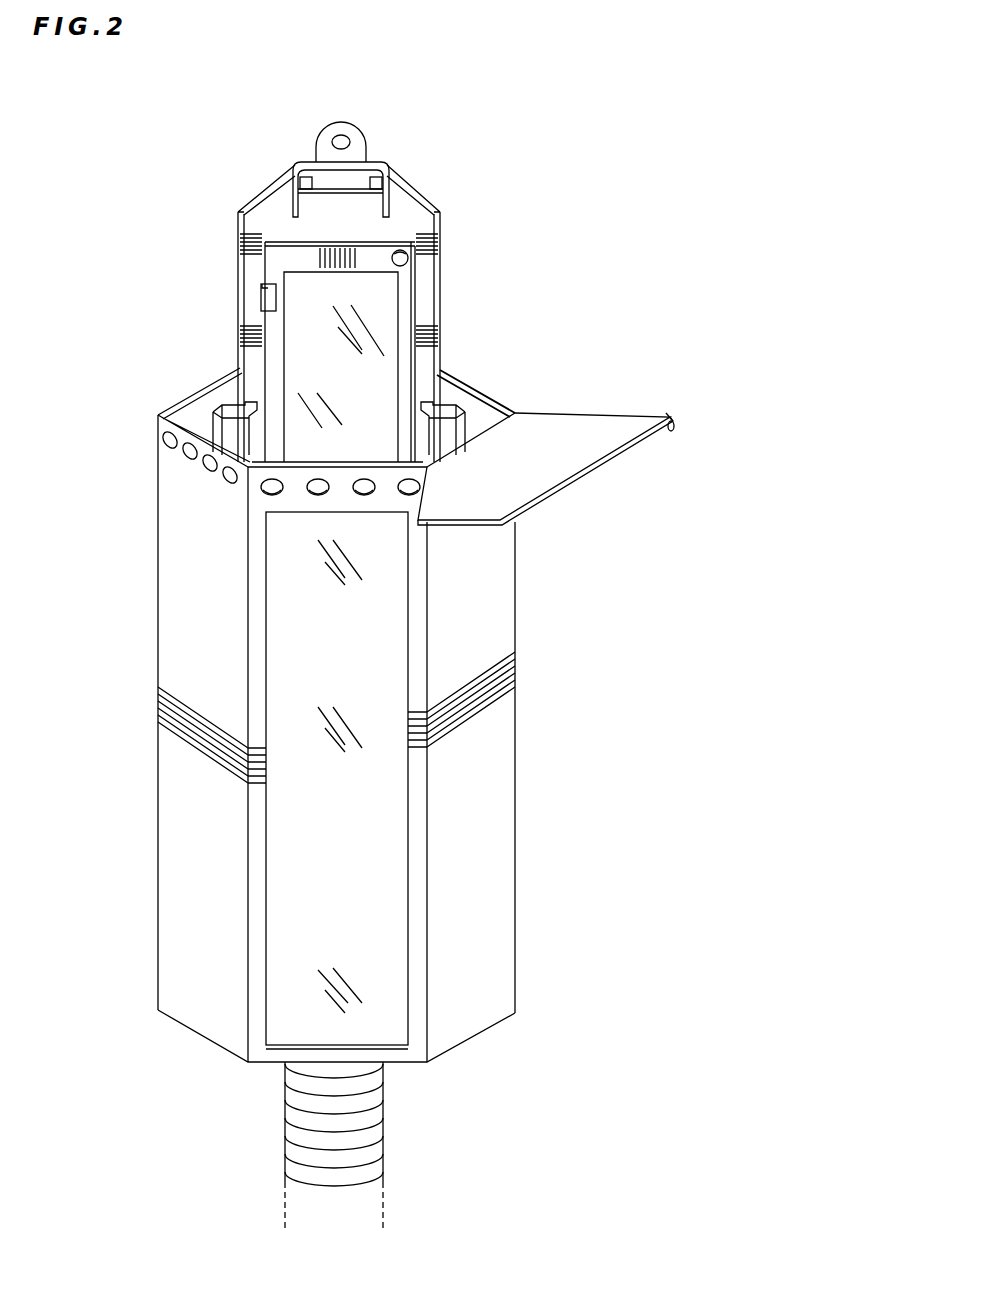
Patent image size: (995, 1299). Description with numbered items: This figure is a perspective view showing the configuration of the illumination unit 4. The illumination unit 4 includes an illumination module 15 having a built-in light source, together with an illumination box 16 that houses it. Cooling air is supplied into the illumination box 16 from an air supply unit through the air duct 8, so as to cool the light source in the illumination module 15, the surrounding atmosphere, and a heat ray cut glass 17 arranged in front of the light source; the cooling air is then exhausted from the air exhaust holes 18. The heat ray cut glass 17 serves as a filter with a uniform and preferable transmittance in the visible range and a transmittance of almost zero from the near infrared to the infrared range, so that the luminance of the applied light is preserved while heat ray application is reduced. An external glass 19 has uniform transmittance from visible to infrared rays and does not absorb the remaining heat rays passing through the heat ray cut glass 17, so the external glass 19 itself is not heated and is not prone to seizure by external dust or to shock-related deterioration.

The illumination unit 4 is at (192, 842).
The air duct 8 is at (287, 1145).
The illumination module 15 is at (433, 207).
The illumination box 16 is at (500, 612).
The heat ray cut glass 17 is at (364, 305).
The air exhaust holes 18 is at (203, 466).
The external glass 19 is at (363, 870).